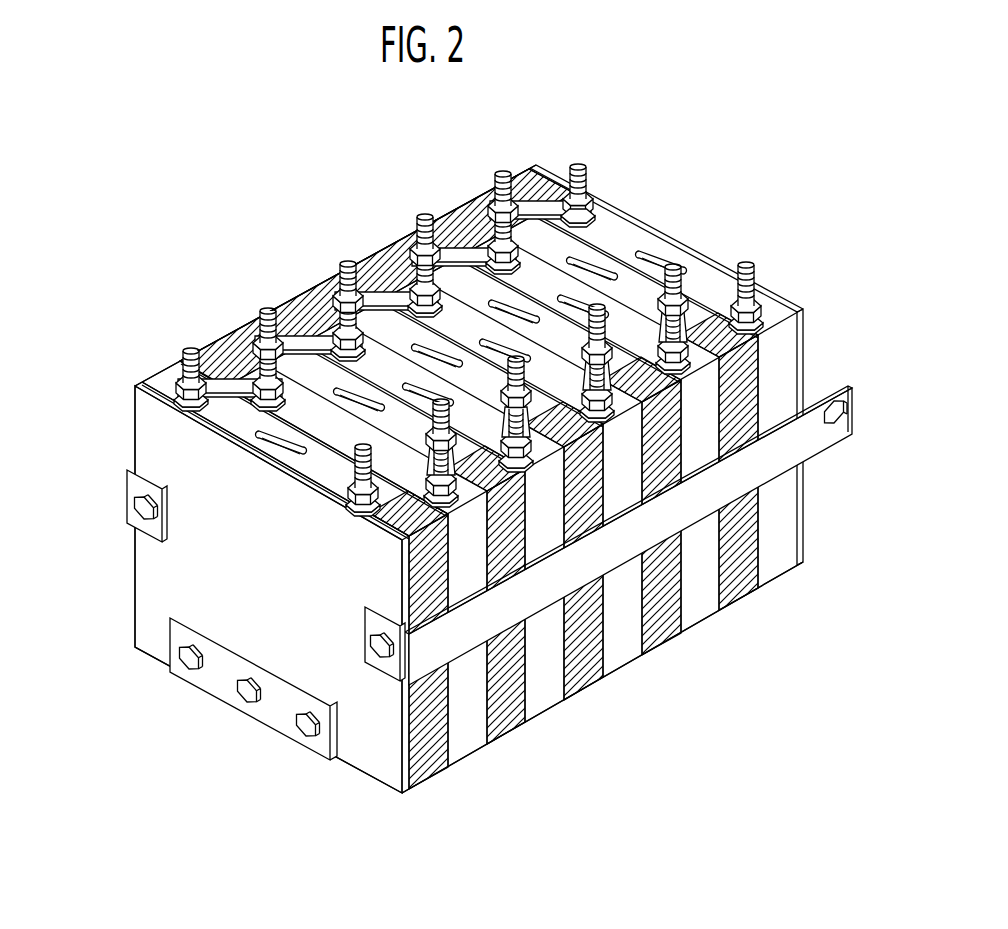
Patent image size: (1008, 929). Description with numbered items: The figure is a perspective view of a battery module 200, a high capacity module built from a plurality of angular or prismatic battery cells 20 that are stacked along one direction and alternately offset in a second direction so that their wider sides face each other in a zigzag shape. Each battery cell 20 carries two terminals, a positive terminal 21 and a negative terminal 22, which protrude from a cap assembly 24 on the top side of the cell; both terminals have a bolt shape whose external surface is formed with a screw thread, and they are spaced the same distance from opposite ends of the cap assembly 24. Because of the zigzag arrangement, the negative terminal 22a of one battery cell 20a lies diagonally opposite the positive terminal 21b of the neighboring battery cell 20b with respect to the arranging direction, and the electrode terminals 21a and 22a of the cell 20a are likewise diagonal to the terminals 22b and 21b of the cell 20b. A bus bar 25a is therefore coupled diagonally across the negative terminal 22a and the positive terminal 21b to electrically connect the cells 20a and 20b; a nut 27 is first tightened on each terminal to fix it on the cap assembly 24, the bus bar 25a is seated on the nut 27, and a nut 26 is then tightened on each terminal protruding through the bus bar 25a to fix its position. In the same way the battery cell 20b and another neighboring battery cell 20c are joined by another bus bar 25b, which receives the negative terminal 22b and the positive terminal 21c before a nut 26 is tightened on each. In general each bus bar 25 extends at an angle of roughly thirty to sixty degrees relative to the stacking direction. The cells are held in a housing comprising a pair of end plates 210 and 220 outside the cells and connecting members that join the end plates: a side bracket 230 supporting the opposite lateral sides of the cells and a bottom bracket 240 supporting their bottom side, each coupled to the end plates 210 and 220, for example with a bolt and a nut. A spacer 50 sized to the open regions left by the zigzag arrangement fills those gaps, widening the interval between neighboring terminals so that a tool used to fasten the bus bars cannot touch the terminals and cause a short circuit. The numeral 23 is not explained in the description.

The battery module 200 is at (156, 212).
The battery cell 20 is at (783, 512).
The battery cell 20a is at (168, 384).
The neighboring battery cell 20b is at (468, 760).
The other battery cell 20c is at (248, 334).
The positive terminal 21 is at (587, 167).
The positive terminal 21a is at (358, 449).
The positive terminal 21b is at (262, 340).
The positive terminal 21c is at (520, 462).
The negative terminal 22 is at (753, 262).
The negative terminal 22a is at (191, 362).
The negative terminal 22b is at (441, 492).
The vent 23 is at (673, 258).
The cap assembly 24 is at (708, 280).
The bus bar 25 is at (540, 197).
The bus bar 25a is at (222, 392).
The bus bar 25b is at (452, 455).
The nut 26 is at (597, 210).
The nut 27 is at (762, 318).
The spacer 50 is at (735, 580).
The end plate 210 is at (160, 588).
The end plate 220 is at (806, 478).
The side bracket 230 is at (124, 502).
The bottom bracket 240 is at (228, 683).